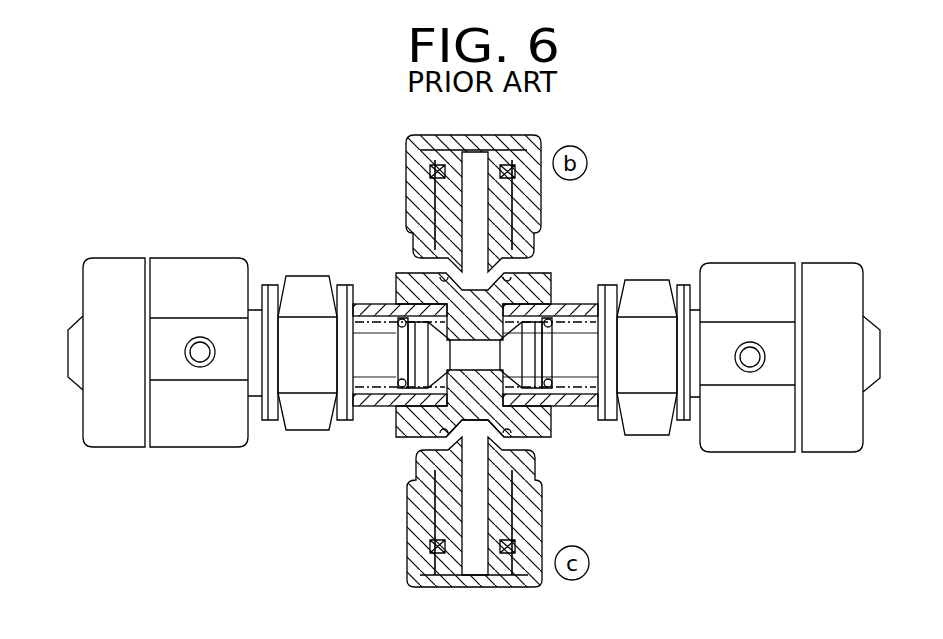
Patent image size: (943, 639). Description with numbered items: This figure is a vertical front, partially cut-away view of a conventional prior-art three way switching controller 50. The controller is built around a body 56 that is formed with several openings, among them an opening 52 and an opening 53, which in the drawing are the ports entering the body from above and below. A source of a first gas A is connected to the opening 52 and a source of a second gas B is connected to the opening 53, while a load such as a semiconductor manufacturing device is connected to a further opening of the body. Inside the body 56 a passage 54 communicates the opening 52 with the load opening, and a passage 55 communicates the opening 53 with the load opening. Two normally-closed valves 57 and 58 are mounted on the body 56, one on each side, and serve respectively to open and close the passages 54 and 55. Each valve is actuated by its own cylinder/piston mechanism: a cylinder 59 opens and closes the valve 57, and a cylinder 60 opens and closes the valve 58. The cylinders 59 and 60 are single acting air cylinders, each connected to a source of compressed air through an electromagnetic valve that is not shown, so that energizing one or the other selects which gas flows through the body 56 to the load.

The three way switching controller 50 is at (226, 141).
The opening 52 is at (500, 266).
The opening 53 is at (500, 478).
The passage 54 is at (397, 279).
The passage 55 is at (507, 425).
The body 56 is at (395, 438).
The normally-closed valve 57 is at (318, 420).
The normally-closed valve 58 is at (627, 285).
The cylinder/piston mechanism 59 is at (110, 347).
The cylinder/piston mechanism 60 is at (832, 352).